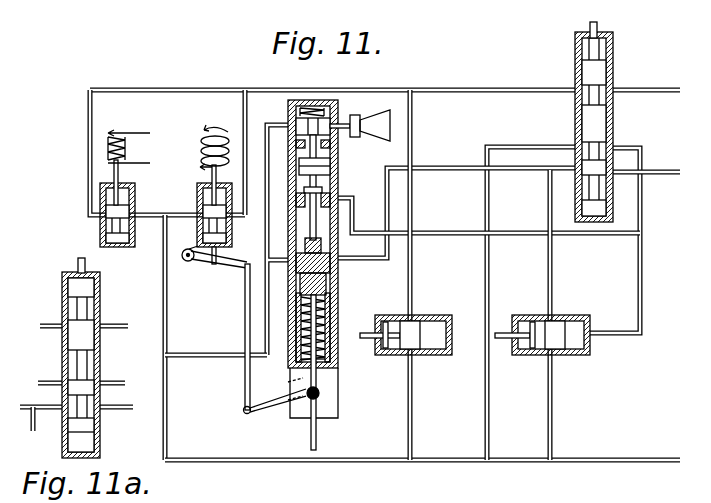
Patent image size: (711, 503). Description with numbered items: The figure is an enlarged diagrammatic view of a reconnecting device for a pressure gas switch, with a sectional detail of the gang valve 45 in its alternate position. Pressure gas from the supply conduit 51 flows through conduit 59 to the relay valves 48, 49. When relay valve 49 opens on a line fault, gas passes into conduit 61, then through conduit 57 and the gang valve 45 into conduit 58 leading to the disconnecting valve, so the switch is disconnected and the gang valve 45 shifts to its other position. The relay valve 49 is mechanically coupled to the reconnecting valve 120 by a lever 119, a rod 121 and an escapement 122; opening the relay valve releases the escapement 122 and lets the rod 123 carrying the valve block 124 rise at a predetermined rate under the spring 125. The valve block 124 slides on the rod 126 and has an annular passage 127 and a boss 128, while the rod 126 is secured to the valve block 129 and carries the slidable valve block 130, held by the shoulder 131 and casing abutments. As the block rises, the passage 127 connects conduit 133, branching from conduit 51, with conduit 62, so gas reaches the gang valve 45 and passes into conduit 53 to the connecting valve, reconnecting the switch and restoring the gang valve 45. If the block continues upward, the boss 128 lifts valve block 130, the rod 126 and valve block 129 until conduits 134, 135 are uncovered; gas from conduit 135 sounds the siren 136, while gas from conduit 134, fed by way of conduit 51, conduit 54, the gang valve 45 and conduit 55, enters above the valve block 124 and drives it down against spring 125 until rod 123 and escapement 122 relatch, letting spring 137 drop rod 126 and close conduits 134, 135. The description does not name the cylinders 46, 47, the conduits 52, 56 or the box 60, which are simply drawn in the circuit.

In FIG. 11, the gang valve 45 is at (576, 125).
In FIG. 11A, the gang valve 45 is at (101, 358).
In FIG. 11, the servo cylinder 46 is at (582, 356).
In FIG. 11, the servo cylinder 47 is at (395, 356).
In FIG. 11, the relay valve 48 is at (136, 198).
In FIG. 11, the relay valve 49 is at (198, 190).
In FIG. 11, the supply conduit 51 is at (242, 462).
In FIG. 11, the conduit 52 is at (553, 294).
In FIG. 11A, the conduit 52 is at (30, 428).
In FIG. 11, the conduit 53 is at (676, 172).
In FIG. 11A, the conduit 53 is at (120, 412).
In FIG. 11, the conduit 54 is at (497, 147).
In FIG. 11A, the conduit 54 is at (46, 383).
In FIG. 11, the conduit 55 is at (640, 150).
In FIG. 11A, the conduit 55 is at (122, 383).
In FIG. 11, the conduit 56 is at (412, 281).
In FIG. 11, the conduit 57 is at (522, 90).
In FIG. 11A, the conduit 57 is at (48, 325).
In FIG. 11, the conduit 58 is at (652, 90).
In FIG. 11A, the conduit 58 is at (124, 325).
In FIG. 11, the conduit 59 is at (165, 286).
In FIG. 11, the conduit 60 is at (88, 113).
In FIG. 11, the conduit 61 is at (244, 115).
In FIG. 11, the conduit 62 is at (352, 262).
In FIG. 11A, the conduit 62 is at (53, 412).
In FIG. 11, the lever 119 is at (208, 268).
In FIG. 11, the reconnecting valve 120 is at (290, 366).
In FIG. 11, the rod 121 is at (246, 305).
In FIG. 11, the escapement 122 is at (311, 400).
In FIG. 11, the rod 123 is at (320, 432).
In FIG. 11, the valve block 124 is at (333, 328).
In FIG. 11, the spring 125 is at (328, 344).
In FIG. 11, the rod 126 is at (331, 170).
In FIG. 11, the annular passage 127 is at (334, 290).
In FIG. 11, the boss 128 is at (330, 248).
In FIG. 11, the valve block 129 is at (296, 122).
In FIG. 11, the valve block 130 is at (288, 200).
In FIG. 11, the shoulder 131 is at (322, 190).
In FIG. 11, the conduit 133 is at (214, 360).
In FIG. 11, the conduit 134 is at (354, 235).
In FIG. 11, the conduit 135 is at (267, 185).
In FIG. 11, the siren 136 is at (378, 128).
In FIG. 11, the spring 137 is at (325, 100).